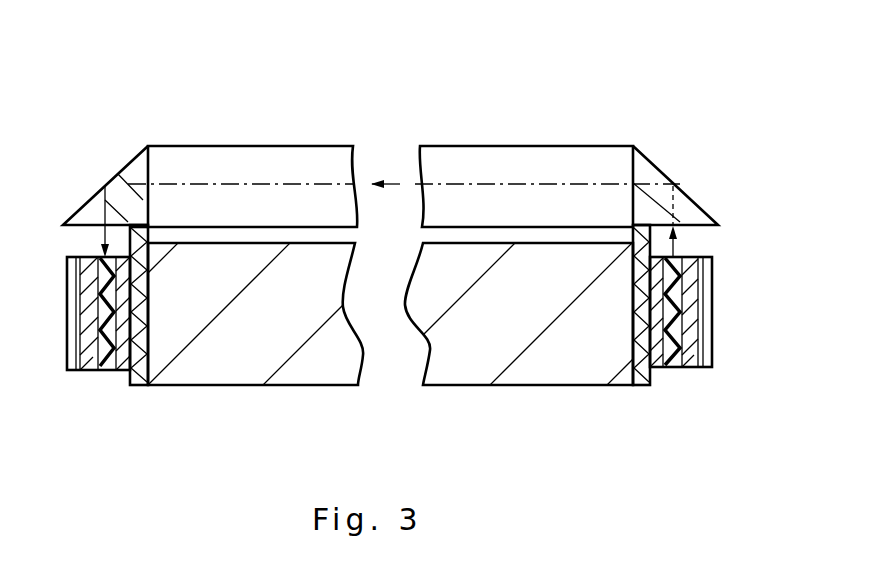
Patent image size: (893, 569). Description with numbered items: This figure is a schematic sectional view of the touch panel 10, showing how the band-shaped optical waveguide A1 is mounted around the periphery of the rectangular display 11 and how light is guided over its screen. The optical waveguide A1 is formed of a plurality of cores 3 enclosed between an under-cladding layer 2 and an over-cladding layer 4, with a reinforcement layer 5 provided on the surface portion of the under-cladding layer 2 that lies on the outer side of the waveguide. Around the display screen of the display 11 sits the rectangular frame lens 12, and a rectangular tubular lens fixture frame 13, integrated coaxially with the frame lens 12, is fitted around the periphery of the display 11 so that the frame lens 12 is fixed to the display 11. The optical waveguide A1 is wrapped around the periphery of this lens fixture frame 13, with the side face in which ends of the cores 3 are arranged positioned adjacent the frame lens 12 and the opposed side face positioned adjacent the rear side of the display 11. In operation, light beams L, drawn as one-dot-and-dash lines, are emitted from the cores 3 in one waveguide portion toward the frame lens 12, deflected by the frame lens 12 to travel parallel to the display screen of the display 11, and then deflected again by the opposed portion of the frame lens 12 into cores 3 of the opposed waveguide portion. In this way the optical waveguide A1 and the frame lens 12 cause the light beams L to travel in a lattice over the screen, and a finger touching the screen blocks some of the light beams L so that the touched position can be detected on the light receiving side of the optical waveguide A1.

The touch panel 10 is at (205, 108).
The display 11 is at (307, 371).
The frame lens 12 is at (128, 167).
The lens fixture frame 13 is at (140, 388).
The light beam L is at (400, 184).
The optical waveguide A1 is at (720, 296).
The under-cladding layer 2 is at (690, 368).
The core 3 is at (672, 368).
The over-cladding layer 4 is at (658, 368).
The reinforcement layer 5 is at (712, 368).